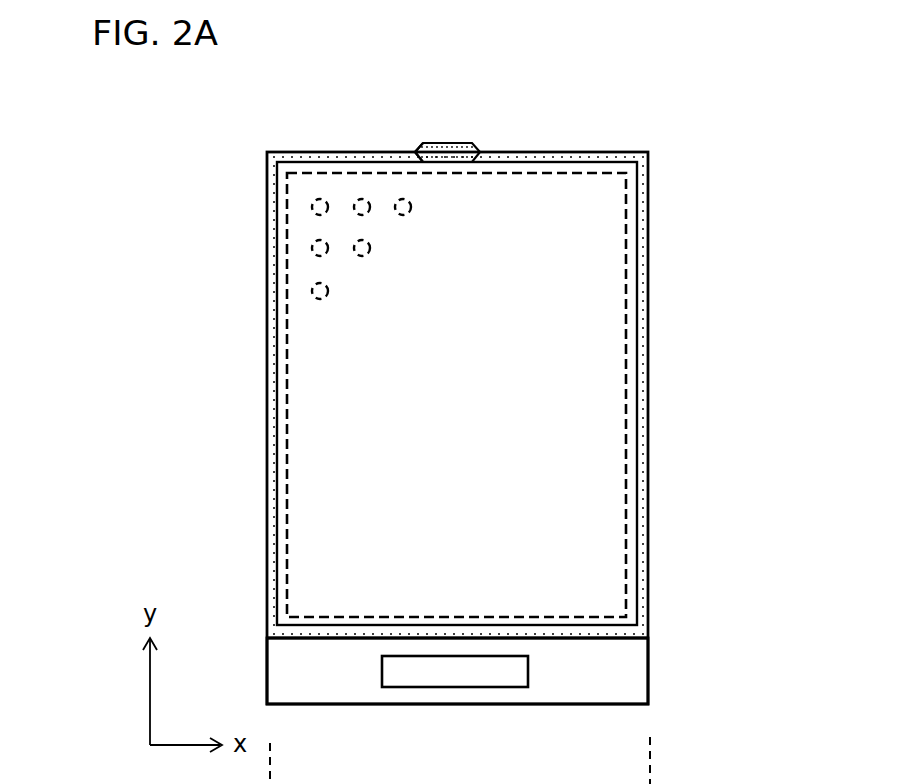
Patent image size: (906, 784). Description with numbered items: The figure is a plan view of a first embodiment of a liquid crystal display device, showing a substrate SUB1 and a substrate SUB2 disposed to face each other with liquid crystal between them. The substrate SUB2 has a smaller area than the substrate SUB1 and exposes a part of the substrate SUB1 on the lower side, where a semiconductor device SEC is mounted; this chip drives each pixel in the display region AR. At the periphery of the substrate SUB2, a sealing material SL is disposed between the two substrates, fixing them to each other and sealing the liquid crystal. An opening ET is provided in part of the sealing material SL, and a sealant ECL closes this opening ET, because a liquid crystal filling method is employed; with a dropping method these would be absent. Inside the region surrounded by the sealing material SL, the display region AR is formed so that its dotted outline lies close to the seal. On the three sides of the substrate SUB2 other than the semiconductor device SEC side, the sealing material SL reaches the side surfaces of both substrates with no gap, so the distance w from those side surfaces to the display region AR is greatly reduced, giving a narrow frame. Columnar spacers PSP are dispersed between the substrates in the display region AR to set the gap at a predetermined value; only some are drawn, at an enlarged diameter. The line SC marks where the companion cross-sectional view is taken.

The substrate SUB1 is at (648, 663).
The substrate SUB2 is at (338, 638).
The sealing material SL is at (647, 387).
The display region AR is at (456, 395).
The semiconductor device SEC is at (492, 687).
The sealant ECL is at (462, 146).
The opening ET is at (416, 144).
The columnar spacer PSP is at (362, 198).
The distance w is at (551, 207).
The line SC- SC is at (255, 249).